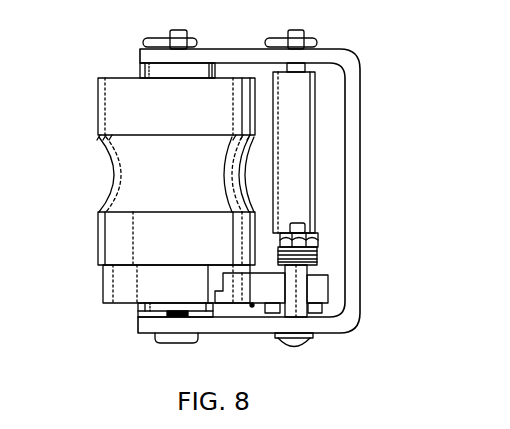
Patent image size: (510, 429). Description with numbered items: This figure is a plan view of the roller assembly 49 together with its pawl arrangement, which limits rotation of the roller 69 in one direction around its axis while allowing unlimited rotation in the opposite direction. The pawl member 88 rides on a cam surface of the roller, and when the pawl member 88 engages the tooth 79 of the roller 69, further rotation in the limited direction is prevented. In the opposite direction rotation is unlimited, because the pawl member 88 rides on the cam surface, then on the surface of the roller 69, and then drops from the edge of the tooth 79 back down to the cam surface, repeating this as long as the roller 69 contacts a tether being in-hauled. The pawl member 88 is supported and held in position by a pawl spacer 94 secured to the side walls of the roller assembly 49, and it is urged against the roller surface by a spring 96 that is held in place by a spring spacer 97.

The roller assembly 49 is at (352, 157).
The roller 69 is at (128, 248).
The tooth 79 is at (221, 305).
The pawl member 88 is at (265, 298).
The pawl spacer 94 is at (301, 103).
The spring 96 is at (318, 257).
The spring spacer 97 is at (298, 289).